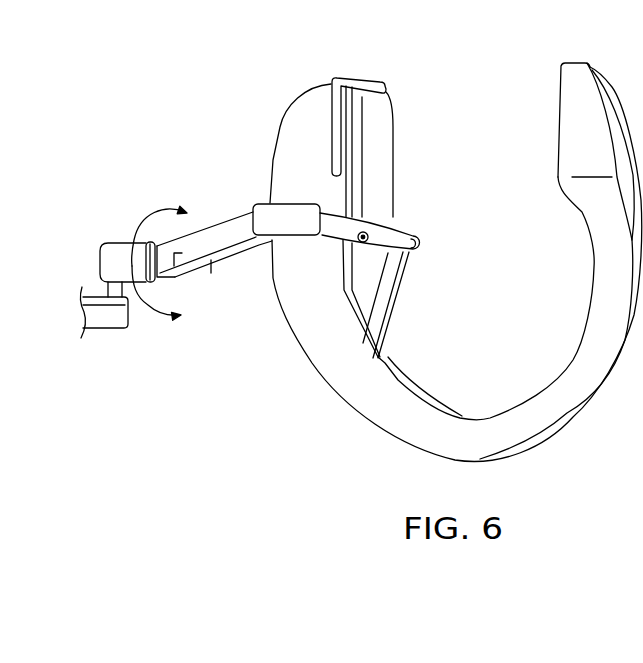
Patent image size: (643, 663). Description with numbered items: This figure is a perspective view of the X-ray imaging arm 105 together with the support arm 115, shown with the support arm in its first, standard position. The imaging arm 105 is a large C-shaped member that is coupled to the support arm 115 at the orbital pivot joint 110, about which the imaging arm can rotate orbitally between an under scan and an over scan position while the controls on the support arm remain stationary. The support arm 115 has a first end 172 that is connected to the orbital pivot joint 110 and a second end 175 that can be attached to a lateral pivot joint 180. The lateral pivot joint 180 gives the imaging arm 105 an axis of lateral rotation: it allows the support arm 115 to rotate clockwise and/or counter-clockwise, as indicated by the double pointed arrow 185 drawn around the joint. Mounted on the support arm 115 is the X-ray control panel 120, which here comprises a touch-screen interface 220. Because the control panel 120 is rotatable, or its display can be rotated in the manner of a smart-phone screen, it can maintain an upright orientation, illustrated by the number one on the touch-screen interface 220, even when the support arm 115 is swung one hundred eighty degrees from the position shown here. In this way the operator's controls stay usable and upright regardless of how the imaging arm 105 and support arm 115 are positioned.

The X-ray imaging arm 105 is at (311, 110).
The touch-screen interface 220 is at (270, 201).
The support arm 115 is at (231, 203).
The double pointed arrow 185 is at (156, 209).
The control panel 120 is at (311, 203).
The orbital pivot joint 110 is at (365, 237).
The lateral pivot joint 180 is at (166, 293).
The first end 172 is at (182, 274).
The second end 175 is at (347, 243).